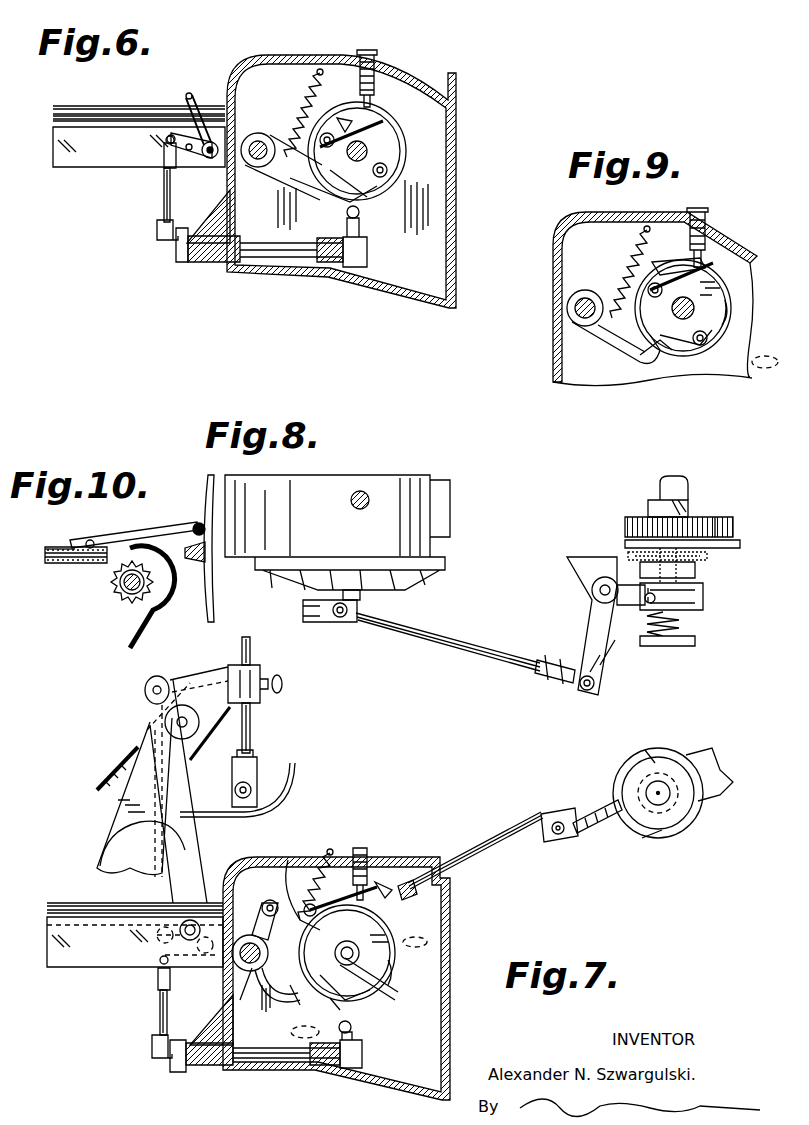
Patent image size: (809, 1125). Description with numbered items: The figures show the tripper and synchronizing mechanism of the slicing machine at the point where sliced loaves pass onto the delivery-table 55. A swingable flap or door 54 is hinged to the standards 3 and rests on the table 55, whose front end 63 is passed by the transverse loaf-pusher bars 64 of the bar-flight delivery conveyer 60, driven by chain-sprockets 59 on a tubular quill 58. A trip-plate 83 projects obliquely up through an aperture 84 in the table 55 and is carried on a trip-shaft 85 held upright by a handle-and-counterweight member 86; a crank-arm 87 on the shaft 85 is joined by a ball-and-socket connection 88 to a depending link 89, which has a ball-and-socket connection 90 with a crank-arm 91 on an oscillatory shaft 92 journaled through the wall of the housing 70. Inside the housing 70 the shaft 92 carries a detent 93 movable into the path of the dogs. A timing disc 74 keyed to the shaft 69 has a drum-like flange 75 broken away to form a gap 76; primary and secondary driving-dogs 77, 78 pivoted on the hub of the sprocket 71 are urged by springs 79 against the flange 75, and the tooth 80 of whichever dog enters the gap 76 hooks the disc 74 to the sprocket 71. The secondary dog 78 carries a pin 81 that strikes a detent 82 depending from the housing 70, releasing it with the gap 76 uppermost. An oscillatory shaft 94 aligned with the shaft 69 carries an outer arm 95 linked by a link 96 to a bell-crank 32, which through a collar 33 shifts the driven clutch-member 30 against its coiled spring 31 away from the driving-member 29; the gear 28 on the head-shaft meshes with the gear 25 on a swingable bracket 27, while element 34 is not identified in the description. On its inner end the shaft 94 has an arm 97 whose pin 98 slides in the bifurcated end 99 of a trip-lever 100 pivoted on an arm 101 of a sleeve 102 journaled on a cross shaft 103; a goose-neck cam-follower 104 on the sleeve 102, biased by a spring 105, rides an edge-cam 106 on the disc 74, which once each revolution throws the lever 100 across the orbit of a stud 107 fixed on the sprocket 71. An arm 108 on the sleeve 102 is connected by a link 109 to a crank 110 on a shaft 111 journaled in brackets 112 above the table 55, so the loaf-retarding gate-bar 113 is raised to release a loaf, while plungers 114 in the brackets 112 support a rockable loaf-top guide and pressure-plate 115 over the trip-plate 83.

In FIG. 10, the standards 3 is at (208, 502).
In FIG. 8, the gear 25 is at (732, 517).
In FIG. 8, the bracket 27 is at (740, 542).
In FIG. 7, the bracket 27 is at (713, 752).
In FIG. 8, the gear 28 is at (625, 527).
In FIG. 8, the driving-member 29 is at (695, 572).
In FIG. 8, the driven-member 30 is at (704, 595).
In FIG. 8, the coiled spring 31 is at (696, 640).
In FIG. 8, the bell-crank 32 is at (583, 690).
In FIG. 7, the bell-crank 32 is at (622, 768).
In FIG. 8, the collar 33 is at (704, 605).
In FIG. 8, the gear 34 is at (708, 556).
In FIG. 10, the flap 54 is at (160, 527).
In FIG. 6, the delivery-table 55 is at (128, 106).
In FIG. 10, the delivery-table 55 is at (70, 565).
In FIG. 7, the delivery-table 55 is at (108, 920).
In FIG. 8, the tubular shaft 58 is at (688, 505).
In FIG. 10, the chain-sprockets 59 is at (125, 595).
In FIG. 10, the delivery conveyer 60 is at (68, 547).
In FIG. 7, the delivery conveyer 60 is at (88, 903).
In FIG. 10, the front end 63 is at (150, 548).
In FIG. 10, the loaf-pusher bars 64 is at (108, 524).
In FIG. 6, the shaft 69 is at (342, 155).
In FIG. 9, the shaft 69 is at (695, 312).
In FIG. 8, the shaft 69 is at (680, 478).
In FIG. 6, the housing 70 is at (456, 185).
In FIG. 9, the housing 70 is at (727, 235).
In FIG. 8, the housing 70 is at (412, 480).
In FIG. 7, the housing 70 is at (442, 940).
In FIG. 7, the sprocket 71 is at (360, 948).
In FIG. 6, the timing disc 74 is at (404, 152).
In FIG. 9, the timing disc 74 is at (722, 285).
In FIG. 7, the timing disc 74 is at (378, 922).
In FIG. 9, the lateral flange 75 is at (730, 303).
In FIG. 7, the lateral flange 75 is at (395, 968).
In FIG. 6, the gap 76 is at (290, 192).
In FIG. 9, the gap 76 is at (722, 295).
In FIG. 7, the gap 76 is at (398, 950).
In FIG. 6, the primary driving-dog 77 is at (340, 200).
In FIG. 9, the primary driving-dog 77 is at (665, 352).
In FIG. 7, the primary driving-dog 77 is at (360, 998).
In FIG. 6, the secondary driving-dog 78 is at (345, 118).
In FIG. 9, the secondary driving-dog 78 is at (708, 270).
In FIG. 7, the secondary driving-dog 78 is at (388, 886).
In FIG. 6, the springs 79 is at (390, 140).
In FIG. 9, the springs 79 is at (648, 285).
In FIG. 6, the tooth 80 is at (308, 106).
In FIG. 9, the tooth 80 is at (655, 280).
In FIG. 6, the pin 81 is at (384, 124).
In FIG. 9, the pin 81 is at (700, 262).
In FIG. 7, the pin 81 is at (385, 882).
In FIG. 6, the detent 82 is at (372, 96).
In FIG. 9, the detent 82 is at (690, 248).
In FIG. 8, the detent 82 is at (369, 502).
In FIG. 7, the detent 82 is at (353, 864).
In FIG. 6, the trip-plate 83 is at (206, 90).
In FIG. 7, the trip-plate 83 is at (160, 935).
In FIG. 6, the aperture 84 is at (178, 107).
In FIG. 6, the trip-shaft 85 is at (210, 158).
In FIG. 6, the handle-member and counterweight 86 is at (362, 196).
In FIG. 6, the crank-arm 87 is at (191, 151).
In FIG. 6, the ball-and-socket connection 88 is at (164, 156).
In FIG. 7, the ball-and-socket connection 88 is at (158, 982).
In FIG. 6, the link 89 is at (164, 202).
In FIG. 7, the link 89 is at (160, 1010).
In FIG. 6, the ball-and-socket connection 90 is at (157, 236).
In FIG. 7, the ball-and-socket connection 90 is at (152, 1047).
In FIG. 6, the crank-arm 91 is at (179, 256).
In FIG. 7, the crank-arm 91 is at (175, 1066).
In FIG. 6, the oscillatory shaft 92 is at (244, 262).
In FIG. 7, the oscillatory shaft 92 is at (240, 1066).
In FIG. 6, the detent 93 is at (366, 250).
In FIG. 7, the detent 93 is at (362, 1054).
In FIG. 8, the oscillatory shaft 94 is at (362, 596).
In FIG. 7, the oscillatory shaft 94 is at (398, 998).
In FIG. 8, the arm 95 is at (303, 610).
In FIG. 7, the arm 95 is at (417, 893).
In FIG. 8, the link 96 is at (470, 648).
In FIG. 7, the link 96 is at (474, 855).
In FIG. 7, the arm 97 is at (333, 1012).
In FIG. 7, the pin 98 is at (291, 1007).
In FIG. 7, the bifurcated end 99 is at (263, 1004).
In FIG. 7, the trip-lever 100 is at (292, 876).
In FIG. 7, the arm 101 is at (264, 902).
In FIG. 7, the sleeve 102 is at (250, 990).
In FIG. 9, the shaft 103 is at (585, 326).
In FIG. 7, the shaft 103 is at (247, 971).
In FIG. 9, the cam-follower 104 is at (615, 345).
In FIG. 7, the cam-follower 104 is at (277, 1006).
In FIG. 9, the spring 105 is at (638, 238).
In FIG. 7, the spring 105 is at (334, 852).
In FIG. 9, the edge-cam 106 is at (768, 361).
In FIG. 7, the edge-cam 106 is at (420, 941).
In FIG. 7, the stud 107 is at (310, 1031).
In FIG. 7, the arm 108 is at (196, 947).
In FIG. 7, the link 109 is at (192, 845).
In FIG. 7, the crank 110 is at (185, 700).
In FIG. 7, the shaft 111 is at (193, 762).
In FIG. 7, the brackets 112 is at (108, 815).
In FIG. 7, the loaf-retarding gate-bar 113 is at (96, 788).
In FIG. 7, the post 114 is at (251, 736).
In FIG. 7, the pressure-plate 115 is at (288, 812).